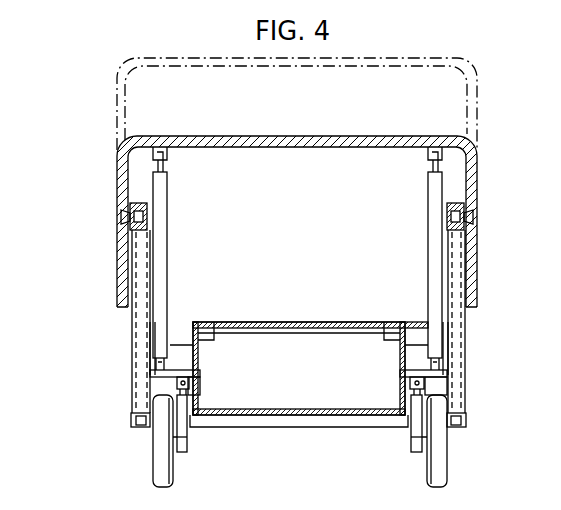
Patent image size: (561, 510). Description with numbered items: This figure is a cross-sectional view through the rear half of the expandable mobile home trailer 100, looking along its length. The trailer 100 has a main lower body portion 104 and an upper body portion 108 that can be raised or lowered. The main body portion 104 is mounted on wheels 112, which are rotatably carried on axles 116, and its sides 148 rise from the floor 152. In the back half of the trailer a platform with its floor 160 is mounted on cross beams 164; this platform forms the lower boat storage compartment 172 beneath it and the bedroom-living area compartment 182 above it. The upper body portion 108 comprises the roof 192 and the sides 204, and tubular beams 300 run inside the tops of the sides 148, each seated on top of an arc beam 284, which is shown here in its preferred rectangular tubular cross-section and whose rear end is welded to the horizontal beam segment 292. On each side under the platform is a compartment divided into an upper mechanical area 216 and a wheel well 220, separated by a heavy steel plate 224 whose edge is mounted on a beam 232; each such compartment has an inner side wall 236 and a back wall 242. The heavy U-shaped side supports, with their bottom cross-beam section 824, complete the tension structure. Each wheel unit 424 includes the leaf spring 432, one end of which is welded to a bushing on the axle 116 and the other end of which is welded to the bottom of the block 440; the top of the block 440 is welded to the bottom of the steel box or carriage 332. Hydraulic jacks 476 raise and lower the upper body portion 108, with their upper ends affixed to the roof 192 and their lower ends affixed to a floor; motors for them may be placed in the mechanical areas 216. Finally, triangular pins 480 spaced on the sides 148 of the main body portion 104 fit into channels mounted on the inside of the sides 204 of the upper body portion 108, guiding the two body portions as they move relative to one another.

The trailer 100 is at (112, 160).
The main body portion 104 is at (470, 380).
The upper body portion 108 is at (479, 110).
The wheels 112 is at (163, 468).
The axles 116 is at (177, 440).
The sides 148 is at (130, 332).
The floor 152 is at (273, 428).
The floor 160 is at (286, 322).
The cross beams 164 is at (284, 328).
The boat storage compartment 172 is at (305, 396).
The bedroom-living area compartment 182 is at (231, 170).
The roof 192 is at (355, 136).
The sides 204 is at (123, 243).
The upper mechanical area 216 is at (181, 345).
The wheel well 220 is at (160, 378).
The heavy plate 224 is at (200, 366).
The beam 232 is at (200, 380).
The inner side wall 236 is at (199, 345).
The back wall 242 is at (174, 345).
The arc beam 284 is at (140, 237).
The horizontal beam segment 292 is at (132, 426).
The tubular beams 300 is at (139, 204).
The box 332 is at (195, 395).
The wheel unit 424 is at (181, 470).
The leaf spring 432 is at (188, 445).
The block 440 is at (191, 392).
The hydraulic jacks 476 is at (168, 233).
The pins 480 is at (124, 215).
The bottom cross-beam section 824 is at (385, 430).